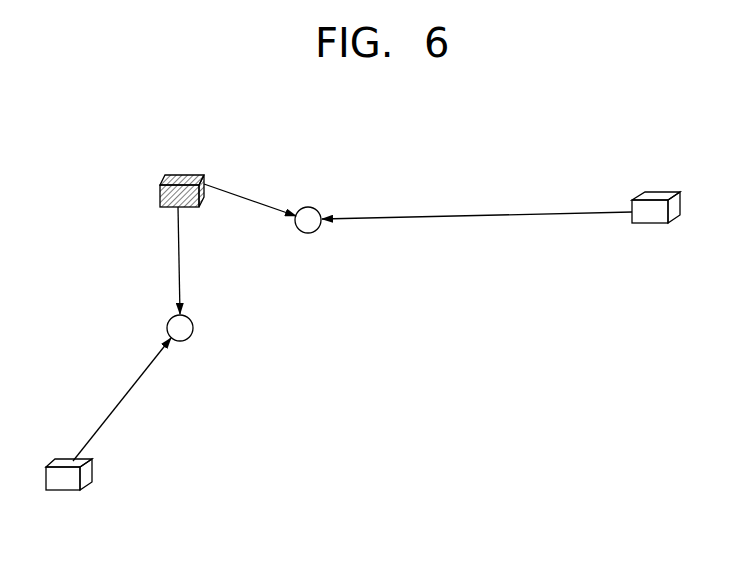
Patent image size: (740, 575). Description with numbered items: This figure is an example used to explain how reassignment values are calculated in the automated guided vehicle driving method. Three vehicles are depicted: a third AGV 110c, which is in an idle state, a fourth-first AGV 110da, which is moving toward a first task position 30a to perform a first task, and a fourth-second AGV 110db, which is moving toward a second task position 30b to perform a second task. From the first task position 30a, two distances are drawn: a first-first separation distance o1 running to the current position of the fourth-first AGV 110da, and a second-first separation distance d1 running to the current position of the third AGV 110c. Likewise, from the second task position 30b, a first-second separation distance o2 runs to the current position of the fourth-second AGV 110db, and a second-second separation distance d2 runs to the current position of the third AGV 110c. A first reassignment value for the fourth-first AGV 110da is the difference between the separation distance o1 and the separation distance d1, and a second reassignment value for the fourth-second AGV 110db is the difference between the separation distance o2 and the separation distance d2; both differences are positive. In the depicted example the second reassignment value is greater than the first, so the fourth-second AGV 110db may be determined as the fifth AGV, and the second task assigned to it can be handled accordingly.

The third AGV 110c is at (160, 195).
The (4-1)st AGV 110da is at (63, 490).
The (4-2)nd AGV 110db is at (652, 223).
The first task position 30a is at (180, 341).
The second task position 30b is at (308, 233).
The (2-1)st separation distance d1 is at (162, 260).
The (2-2)nd separation distance d2 is at (250, 193).
The (1-1)st separation distance o1 is at (122, 399).
The (1-2)nd separation distance o2 is at (477, 202).